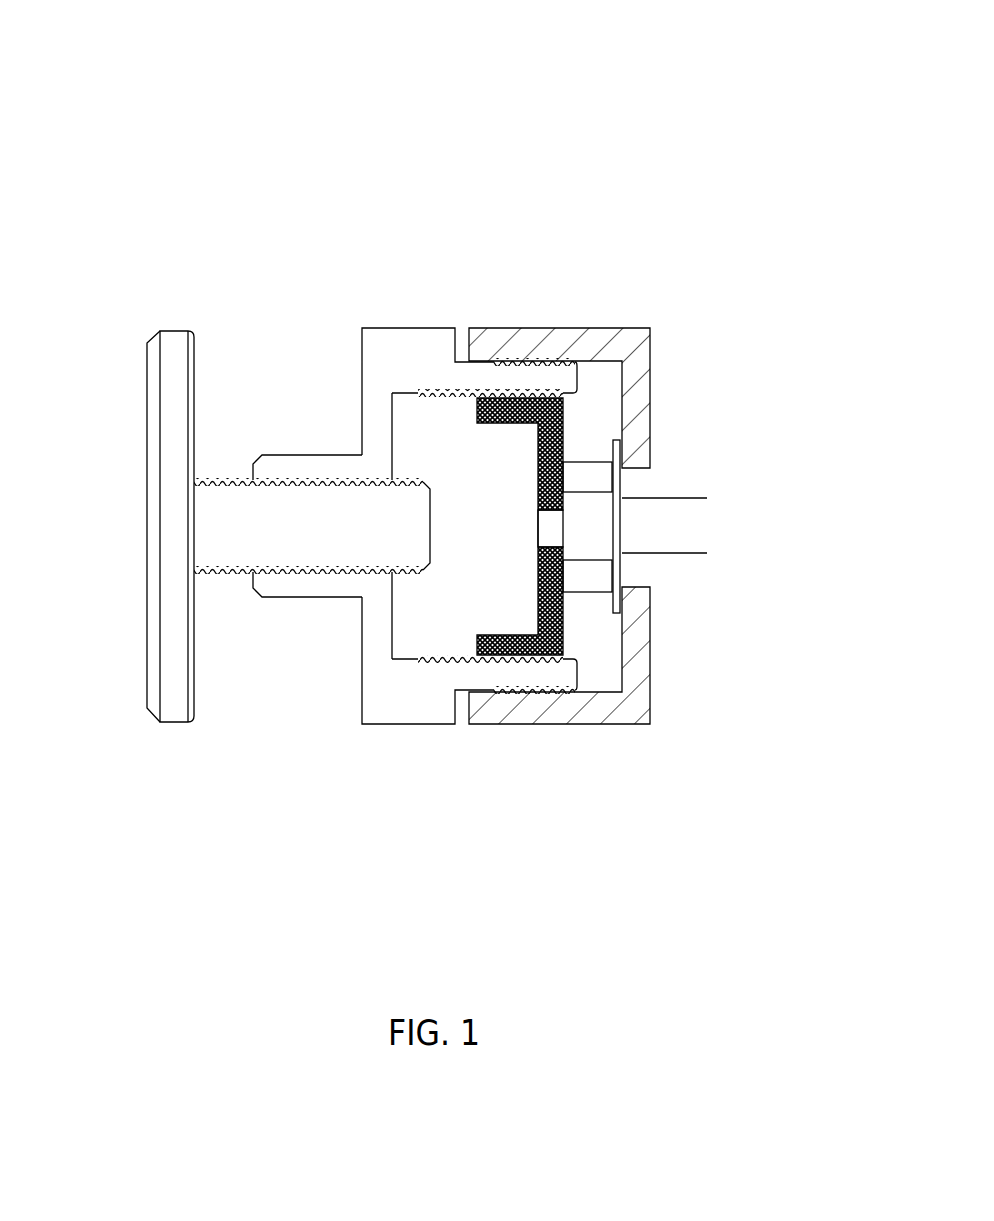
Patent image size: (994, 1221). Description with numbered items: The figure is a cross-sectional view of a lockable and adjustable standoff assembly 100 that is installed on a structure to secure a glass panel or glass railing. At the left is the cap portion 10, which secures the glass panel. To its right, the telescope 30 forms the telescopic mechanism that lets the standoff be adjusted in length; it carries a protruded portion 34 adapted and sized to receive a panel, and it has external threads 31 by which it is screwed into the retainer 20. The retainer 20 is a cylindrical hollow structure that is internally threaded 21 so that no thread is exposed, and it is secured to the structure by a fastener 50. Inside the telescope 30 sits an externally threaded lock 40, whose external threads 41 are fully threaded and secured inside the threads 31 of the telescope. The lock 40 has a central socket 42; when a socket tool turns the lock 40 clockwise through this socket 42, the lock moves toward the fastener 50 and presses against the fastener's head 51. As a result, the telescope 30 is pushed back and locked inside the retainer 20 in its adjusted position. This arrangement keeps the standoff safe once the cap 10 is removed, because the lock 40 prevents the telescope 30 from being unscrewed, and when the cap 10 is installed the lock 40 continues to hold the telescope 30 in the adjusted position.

The standoff assembly 100 is at (693, 152).
The cap portion 10 is at (175, 358).
The protruded portion 34 is at (288, 468).
The telescope 30 is at (387, 350).
The external threads 31 is at (430, 656).
The internal thread 21 is at (553, 363).
The retainer 20 is at (638, 343).
The lock 40 is at (550, 612).
The external threads of the lock assembly 41 is at (520, 655).
The central socket 42 is at (552, 528).
The fastener head 51 is at (572, 478).
The fastener 50 is at (668, 522).